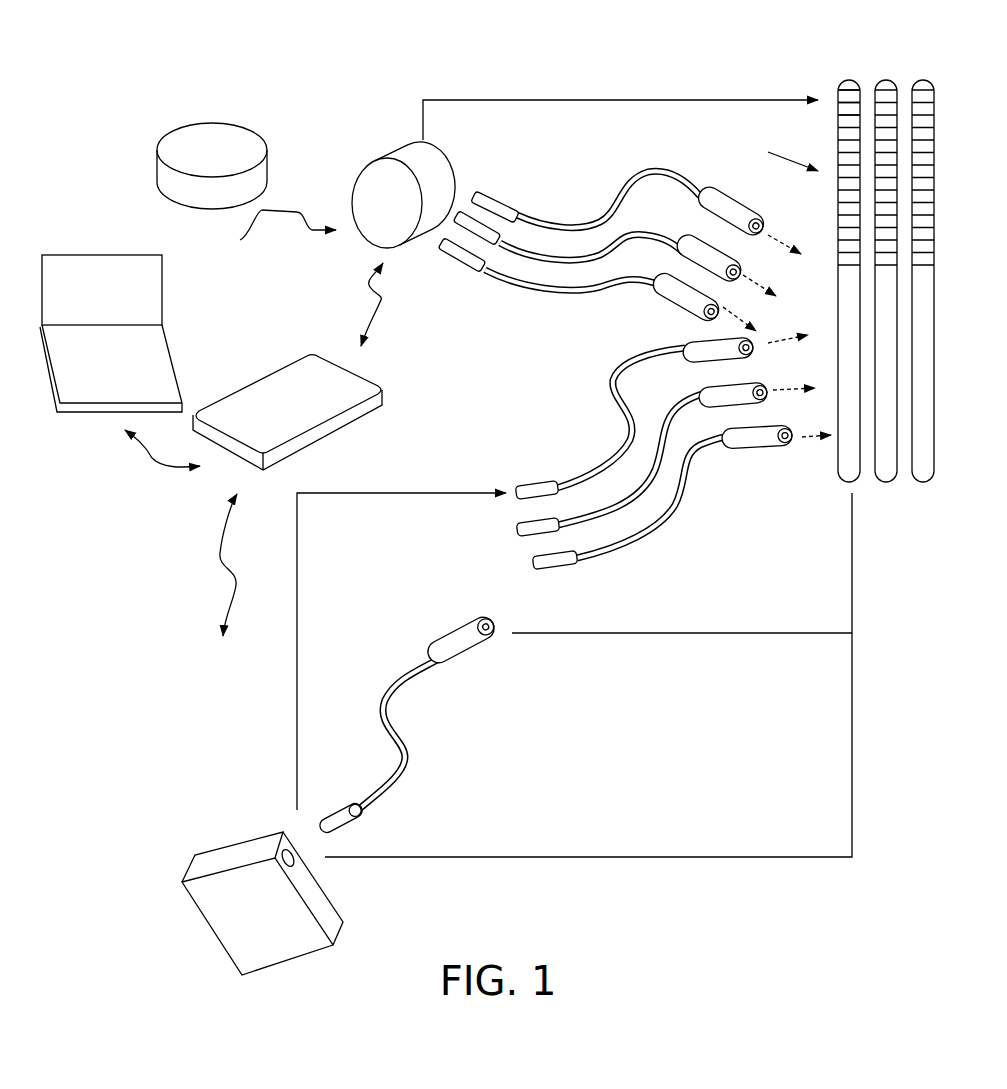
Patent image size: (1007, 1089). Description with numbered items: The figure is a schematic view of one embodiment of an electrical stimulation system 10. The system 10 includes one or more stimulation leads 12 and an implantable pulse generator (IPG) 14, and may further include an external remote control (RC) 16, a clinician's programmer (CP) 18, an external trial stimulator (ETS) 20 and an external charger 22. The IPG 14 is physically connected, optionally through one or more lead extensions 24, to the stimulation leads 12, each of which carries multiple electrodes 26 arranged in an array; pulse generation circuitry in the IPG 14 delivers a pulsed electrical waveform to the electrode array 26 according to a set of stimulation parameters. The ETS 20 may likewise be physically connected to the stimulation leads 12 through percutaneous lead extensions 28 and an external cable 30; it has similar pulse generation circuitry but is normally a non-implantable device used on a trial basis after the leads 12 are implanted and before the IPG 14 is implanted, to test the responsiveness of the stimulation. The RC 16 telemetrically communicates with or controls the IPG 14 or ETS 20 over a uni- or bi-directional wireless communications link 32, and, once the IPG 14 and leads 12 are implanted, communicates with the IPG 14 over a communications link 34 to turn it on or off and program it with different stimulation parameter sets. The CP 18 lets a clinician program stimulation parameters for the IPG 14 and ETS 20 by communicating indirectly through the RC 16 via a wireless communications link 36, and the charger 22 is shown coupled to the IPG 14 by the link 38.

The electrical stimulation system 10 is at (586, 52).
The stimulation leads 12 is at (923, 80).
The implantable pulse generator 14 is at (383, 158).
The external remote control 16 is at (300, 372).
The clinician's programmer 18 is at (84, 272).
The external trial stimulator 20 is at (233, 853).
The external charger 22 is at (212, 133).
The lead extensions 24 is at (640, 270).
The electrodes 26 is at (845, 88).
The percutaneous lead extensions 28 is at (590, 553).
The external cable 30 is at (407, 672).
The wireless communications link 32 is at (229, 608).
The communications link 34 is at (384, 318).
The wireless communications link 36 is at (152, 458).
The charger-IPG inductive link 38 is at (271, 234).